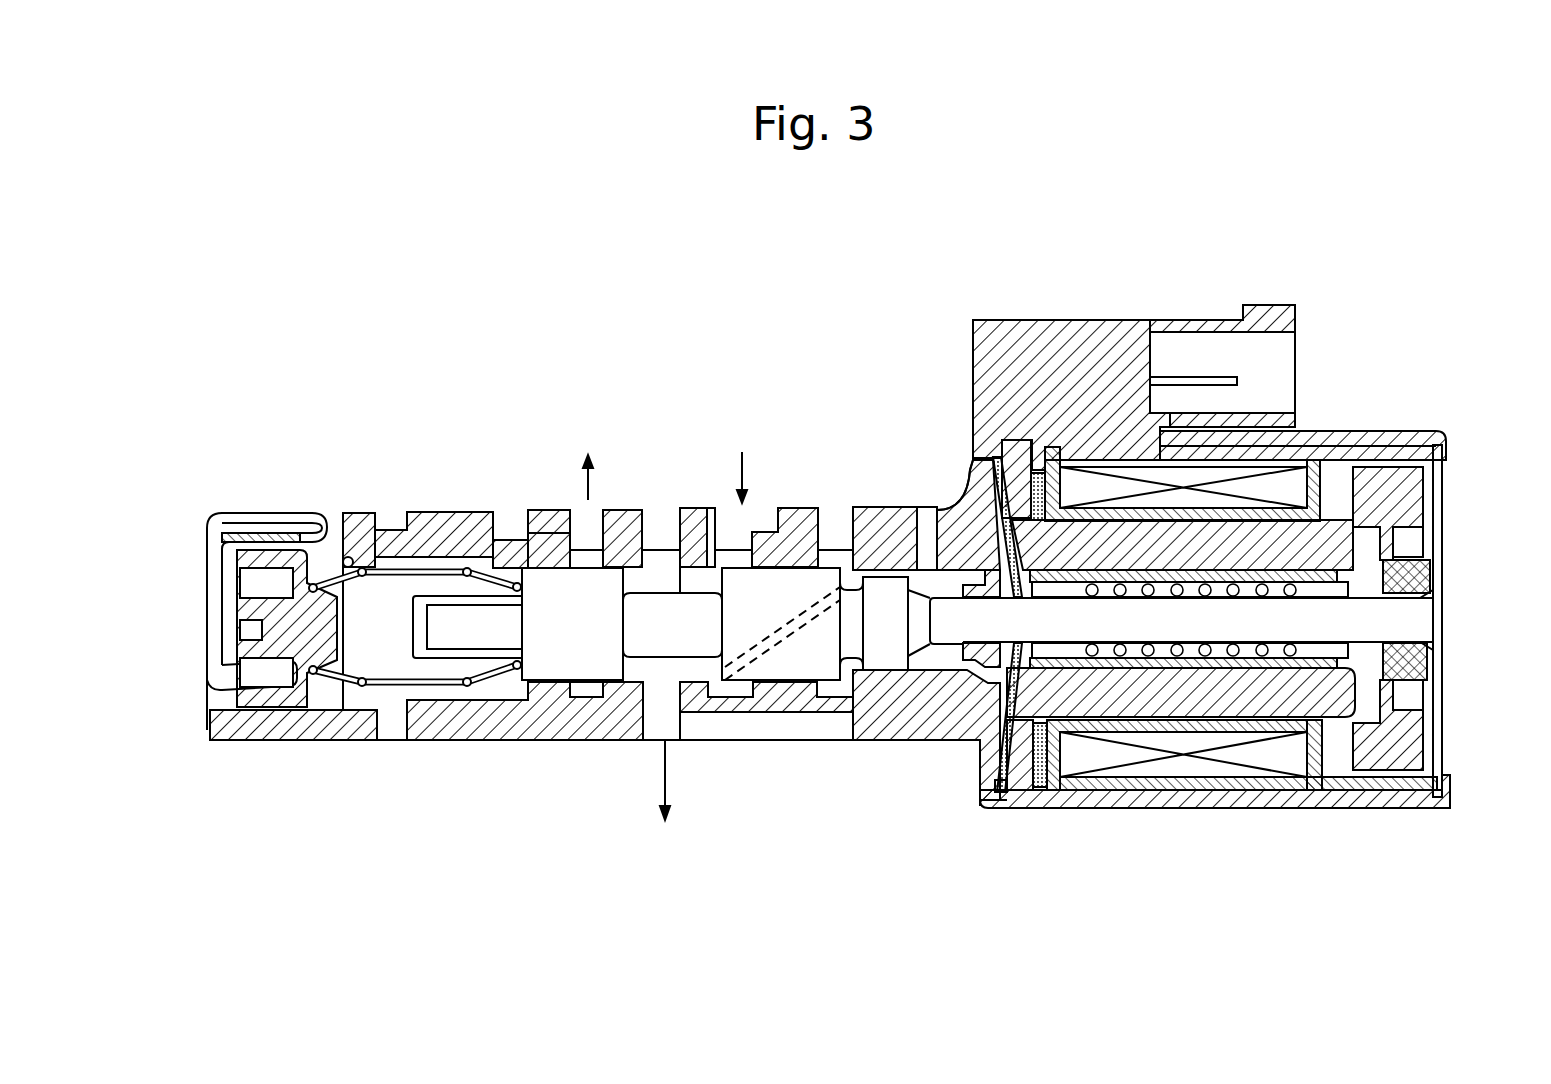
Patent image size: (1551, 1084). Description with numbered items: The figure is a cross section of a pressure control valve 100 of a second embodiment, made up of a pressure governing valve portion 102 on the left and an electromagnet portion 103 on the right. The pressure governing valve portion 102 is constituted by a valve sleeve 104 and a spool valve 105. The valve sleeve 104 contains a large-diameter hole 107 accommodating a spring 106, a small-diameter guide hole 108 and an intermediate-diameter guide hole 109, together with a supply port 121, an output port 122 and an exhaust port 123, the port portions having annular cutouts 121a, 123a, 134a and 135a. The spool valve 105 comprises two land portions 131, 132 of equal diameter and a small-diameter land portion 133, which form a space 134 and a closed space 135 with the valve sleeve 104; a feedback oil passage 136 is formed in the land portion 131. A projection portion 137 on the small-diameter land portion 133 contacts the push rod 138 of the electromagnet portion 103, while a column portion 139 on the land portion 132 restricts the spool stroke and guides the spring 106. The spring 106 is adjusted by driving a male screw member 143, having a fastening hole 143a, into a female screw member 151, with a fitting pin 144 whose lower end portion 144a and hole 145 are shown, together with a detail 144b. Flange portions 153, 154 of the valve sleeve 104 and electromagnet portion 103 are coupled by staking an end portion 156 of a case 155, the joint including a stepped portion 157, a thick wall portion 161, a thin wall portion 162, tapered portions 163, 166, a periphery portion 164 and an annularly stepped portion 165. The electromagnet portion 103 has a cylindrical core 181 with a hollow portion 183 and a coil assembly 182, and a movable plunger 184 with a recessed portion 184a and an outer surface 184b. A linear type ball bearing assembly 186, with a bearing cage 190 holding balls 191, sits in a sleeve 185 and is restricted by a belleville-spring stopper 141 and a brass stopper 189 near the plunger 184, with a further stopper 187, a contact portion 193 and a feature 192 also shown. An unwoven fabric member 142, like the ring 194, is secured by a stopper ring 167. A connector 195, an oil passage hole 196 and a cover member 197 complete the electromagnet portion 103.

The pressure control valve 100 is at (850, 378).
The pressure governing valve portion 102 is at (458, 512).
The electromagnet portion 103 is at (1202, 805).
The valve sleeve 104 is at (363, 513).
The spool valve 105 is at (783, 583).
The spring 106 is at (413, 528).
The large-diameter hole 107 is at (333, 528).
The small-diameter guide hole 108 is at (870, 705).
The intermediate-diameter guide hole 109 is at (663, 567).
The supply port 121 is at (733, 513).
The annular cutout 121a is at (765, 760).
The output port 122 is at (650, 730).
The exhaust port 123 is at (540, 510).
The annular cutout 123a is at (587, 690).
The land portion 131 is at (845, 700).
The land portion 132 is at (555, 665).
The small-diameter land portion 133 is at (890, 655).
The space 134 is at (650, 530).
The annular cutout 134a is at (662, 690).
The closed space 135 is at (832, 530).
The annular cutout 135a is at (812, 700).
The feedback oil passage 136 is at (745, 697).
The projection portion 137 is at (955, 632).
The push rod 138 is at (1320, 640).
The column portion 139 is at (432, 640).
The stopper 141 is at (950, 773).
The unwoven fabric member 142 is at (990, 690).
The male screw member 143 is at (300, 700).
The fastening hole 143a is at (243, 667).
The fitting pin 144 is at (210, 563).
The lower end portion 144a is at (262, 705).
The clip 144b is at (317, 523).
The hole 145 is at (253, 527).
The female screw member 151 is at (212, 720).
The flange portion 153 is at (955, 470).
The flange portion 154 is at (1030, 420).
The case 155 is at (1282, 702).
The end portion 156 is at (978, 785).
The stepped portion 157 is at (1043, 808).
The thick wall portion 161 is at (1000, 760).
The thin wall portion 162 is at (1000, 783).
The tapered portion 163 is at (960, 545).
The periphery portion 164 is at (958, 520).
The annularly stepped portion 165 is at (978, 778).
The tapered portion 166 is at (1020, 455).
The stopper ring 167 is at (927, 560).
The cylindrical core 181 is at (1303, 785).
The coil assembly 182 is at (1160, 770).
The hollow portion 183 is at (1245, 762).
The plunger 184 is at (1420, 802).
The recessed portion 184a is at (1365, 785).
The outer surface 184b is at (1422, 447).
The sleeve 185 is at (1180, 765).
The linear type ball bearing assembly 186 is at (1295, 490).
The stopper 187 is at (1065, 470).
The stopper 189 is at (1393, 577).
The bearing cage 190 is at (1050, 762).
The balls 191 is at (1128, 770).
The rod end 192 is at (1428, 587).
The contact portion 193 is at (983, 655).
The ring 194 is at (1025, 460).
The connector 195 is at (1145, 335).
The oil passage hole 196 is at (1413, 698).
The cover member 197 is at (1441, 748).